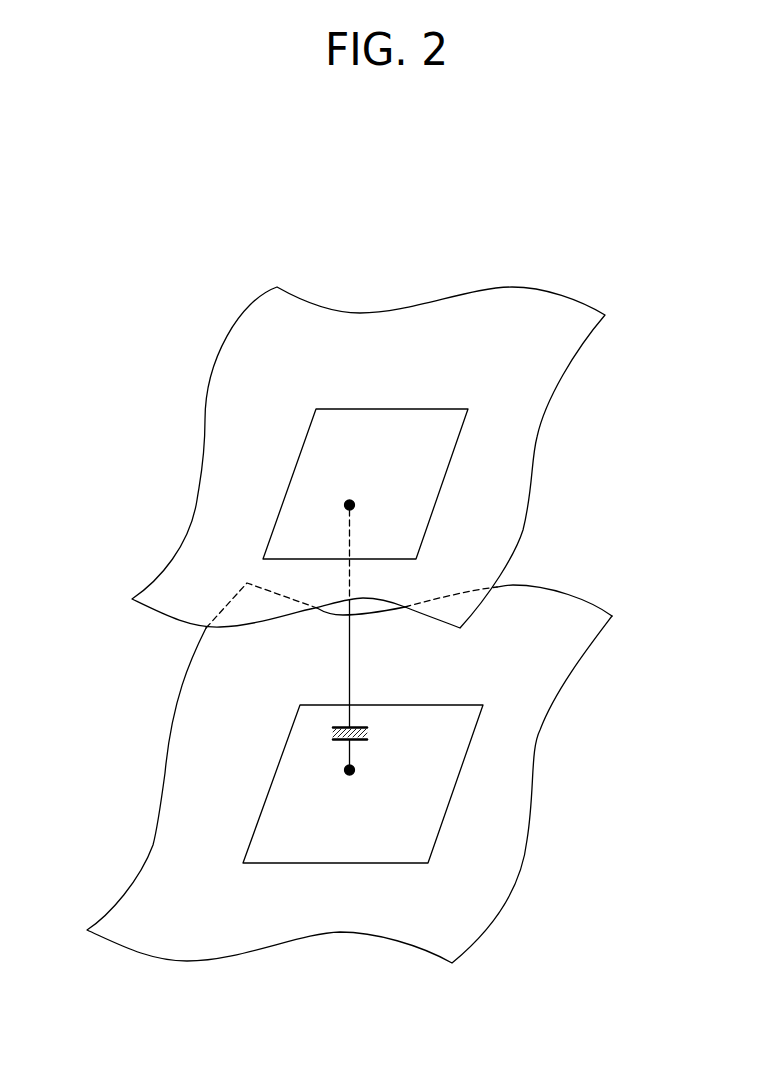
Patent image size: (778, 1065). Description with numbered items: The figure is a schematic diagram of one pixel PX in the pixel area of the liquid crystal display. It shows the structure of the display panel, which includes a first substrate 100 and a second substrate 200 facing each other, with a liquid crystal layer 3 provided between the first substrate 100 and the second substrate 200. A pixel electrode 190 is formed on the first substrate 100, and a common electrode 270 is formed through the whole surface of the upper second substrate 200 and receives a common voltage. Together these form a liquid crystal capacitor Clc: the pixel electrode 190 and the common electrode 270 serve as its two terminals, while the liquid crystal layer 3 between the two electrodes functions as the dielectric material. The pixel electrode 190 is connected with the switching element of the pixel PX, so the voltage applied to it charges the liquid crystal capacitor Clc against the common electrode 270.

The second substrate 200 is at (546, 461).
The common electrode 270 is at (433, 515).
The first substrate 100 is at (546, 778).
The pixel electrode 190 is at (372, 863).
The liquid crystal layer 3 is at (98, 696).
The liquid crystal capacitor Clc is at (369, 735).
The pixel PX is at (396, 217).